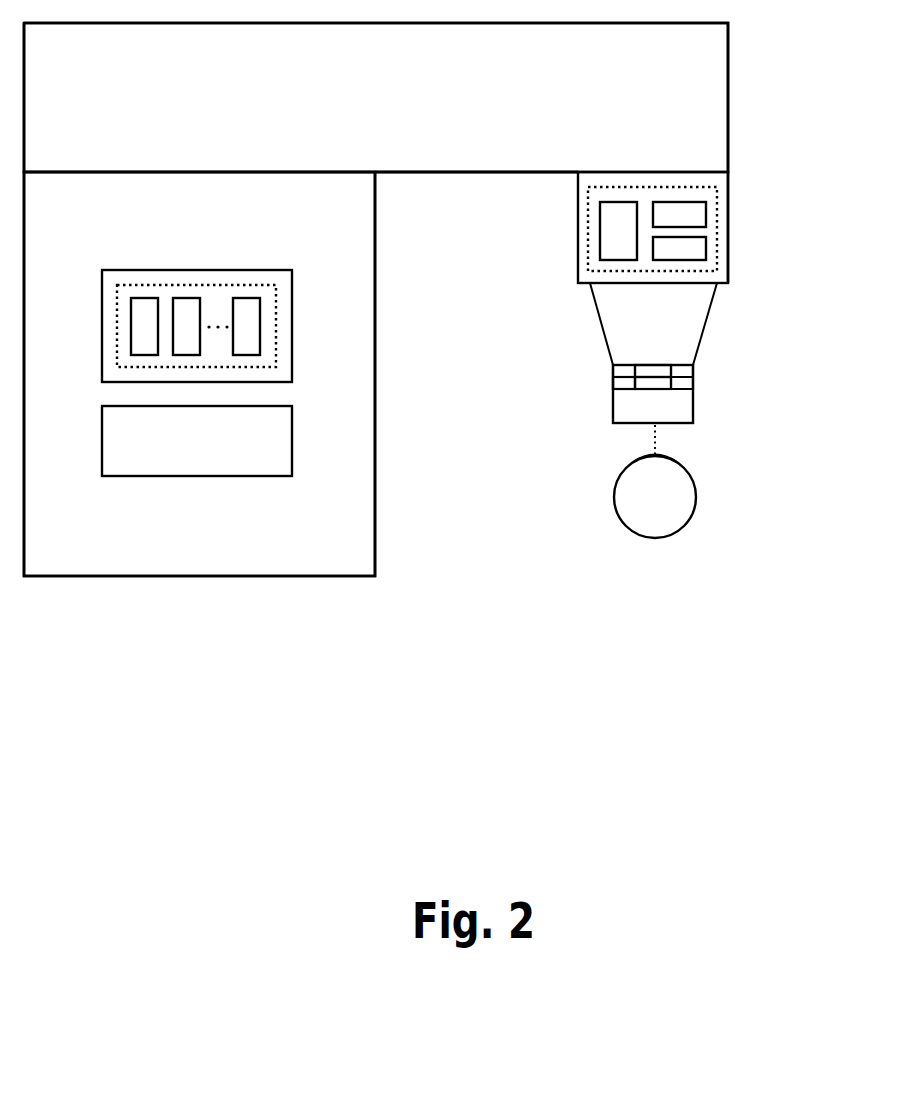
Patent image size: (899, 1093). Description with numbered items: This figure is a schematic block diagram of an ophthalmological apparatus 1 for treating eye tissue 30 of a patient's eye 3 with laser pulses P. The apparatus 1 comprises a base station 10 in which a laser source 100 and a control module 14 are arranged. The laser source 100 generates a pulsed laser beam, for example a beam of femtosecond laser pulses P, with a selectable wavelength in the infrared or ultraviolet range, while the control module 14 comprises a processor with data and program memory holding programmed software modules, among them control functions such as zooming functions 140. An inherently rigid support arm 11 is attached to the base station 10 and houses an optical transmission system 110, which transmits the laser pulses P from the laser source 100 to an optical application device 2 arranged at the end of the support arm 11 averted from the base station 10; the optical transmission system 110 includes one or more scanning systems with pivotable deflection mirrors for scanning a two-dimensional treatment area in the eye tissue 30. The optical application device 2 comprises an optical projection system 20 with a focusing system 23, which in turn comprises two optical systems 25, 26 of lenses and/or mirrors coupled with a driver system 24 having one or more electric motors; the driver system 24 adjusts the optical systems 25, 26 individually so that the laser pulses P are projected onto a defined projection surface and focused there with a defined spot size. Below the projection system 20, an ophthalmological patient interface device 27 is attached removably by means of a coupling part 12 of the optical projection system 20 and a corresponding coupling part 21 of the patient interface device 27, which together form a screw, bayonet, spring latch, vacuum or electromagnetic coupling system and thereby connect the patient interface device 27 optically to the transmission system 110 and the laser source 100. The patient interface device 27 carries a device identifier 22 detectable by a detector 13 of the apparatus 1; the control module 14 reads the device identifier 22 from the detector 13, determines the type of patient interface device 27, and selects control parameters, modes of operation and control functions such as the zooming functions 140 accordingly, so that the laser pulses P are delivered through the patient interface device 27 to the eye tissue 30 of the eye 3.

The ophthalmological apparatus 1 is at (46, 598).
The base station 10 is at (217, 565).
The laser source 100 is at (283, 459).
The support arm 11 is at (438, 190).
The optical transmission system 110 is at (712, 94).
The control module 14 is at (282, 365).
The zooming functions 140 is at (270, 322).
The optical application device 2 is at (520, 440).
The optical projection system 20 is at (565, 297).
The focusing system 23 is at (588, 213).
The driver system 24 is at (608, 237).
The optical system 25 is at (693, 217).
The optical system 26 is at (693, 248).
The ophthalmological patient interface device 27 is at (612, 418).
The coupling part 12 is at (620, 372).
The detector 13 is at (658, 367).
The coupling part 21 is at (620, 380).
The device identifier 22 is at (655, 388).
The eye 3 is at (614, 533).
The eye tissue 30 is at (673, 518).
The laser pulses P is at (655, 437).